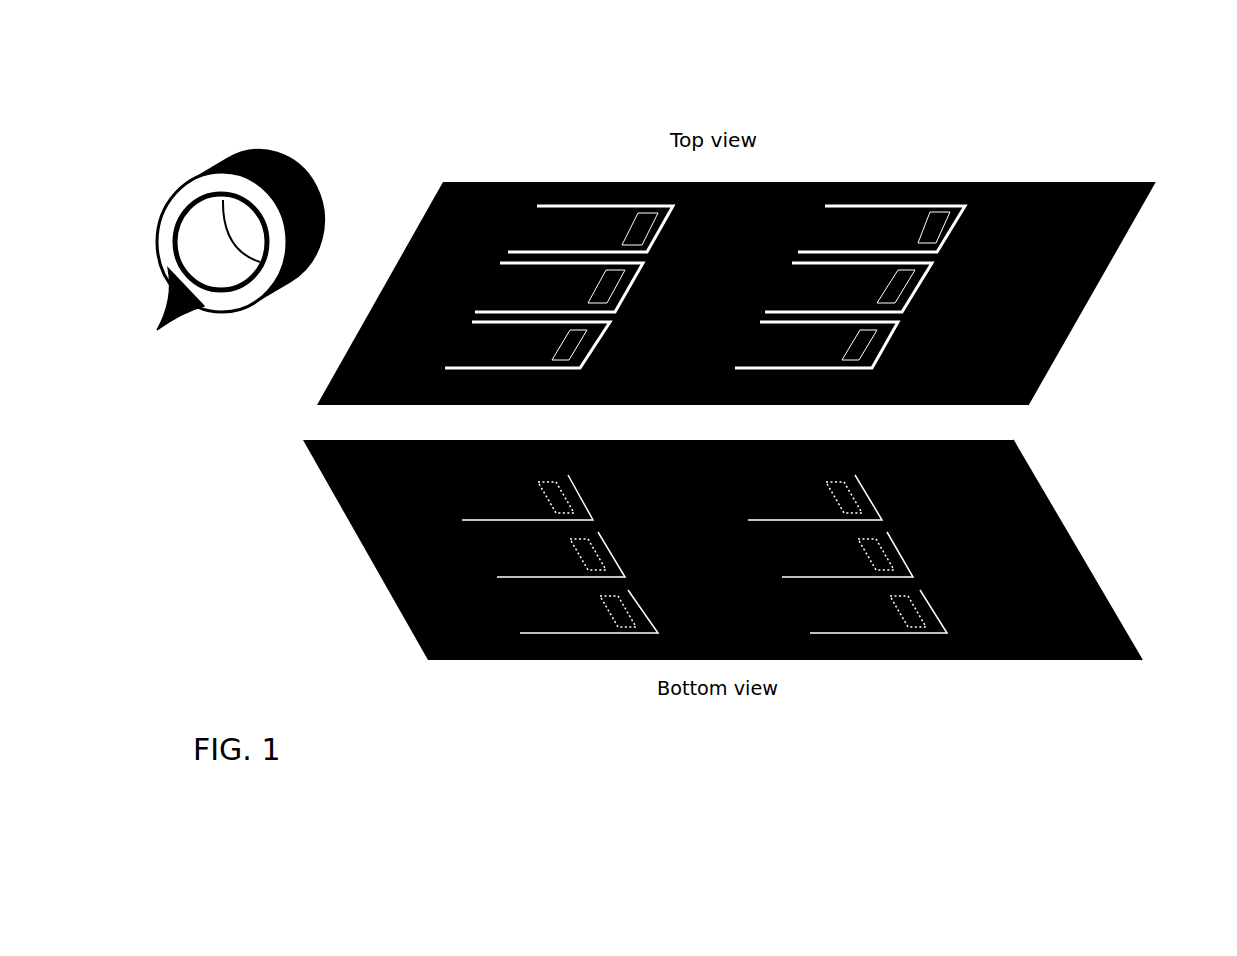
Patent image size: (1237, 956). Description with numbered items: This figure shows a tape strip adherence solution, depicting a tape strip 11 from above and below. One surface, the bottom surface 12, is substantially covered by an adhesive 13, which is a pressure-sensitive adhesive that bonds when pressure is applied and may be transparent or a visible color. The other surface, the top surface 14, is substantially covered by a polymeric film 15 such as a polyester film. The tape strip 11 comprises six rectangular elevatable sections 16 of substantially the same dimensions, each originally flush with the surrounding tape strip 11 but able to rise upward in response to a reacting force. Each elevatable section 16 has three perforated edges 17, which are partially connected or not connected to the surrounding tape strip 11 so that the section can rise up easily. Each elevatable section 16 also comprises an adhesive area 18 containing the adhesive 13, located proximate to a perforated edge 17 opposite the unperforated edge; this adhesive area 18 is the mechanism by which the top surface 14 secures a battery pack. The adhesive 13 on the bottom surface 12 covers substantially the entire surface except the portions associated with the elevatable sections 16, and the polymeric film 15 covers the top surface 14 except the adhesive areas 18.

The tape strip 11 is at (165, 142).
The bottom surface 12 is at (1123, 604).
The adhesive 13 is at (1066, 556).
The top surface 14 is at (1053, 352).
The polymeric film 15 is at (1087, 302).
The elevatable section 16 is at (473, 366).
The perforated edge 17 is at (640, 182).
The adhesive area 18 is at (941, 213).